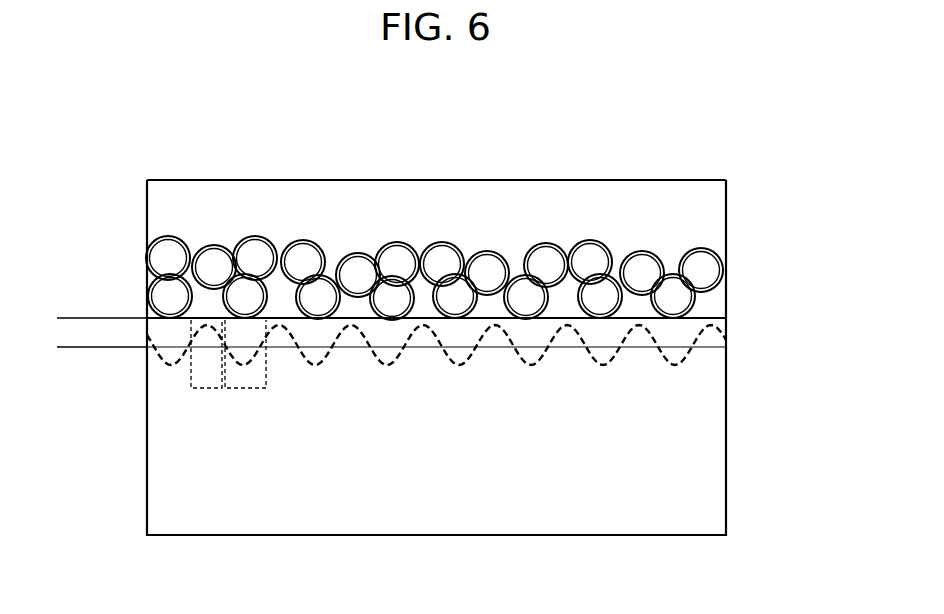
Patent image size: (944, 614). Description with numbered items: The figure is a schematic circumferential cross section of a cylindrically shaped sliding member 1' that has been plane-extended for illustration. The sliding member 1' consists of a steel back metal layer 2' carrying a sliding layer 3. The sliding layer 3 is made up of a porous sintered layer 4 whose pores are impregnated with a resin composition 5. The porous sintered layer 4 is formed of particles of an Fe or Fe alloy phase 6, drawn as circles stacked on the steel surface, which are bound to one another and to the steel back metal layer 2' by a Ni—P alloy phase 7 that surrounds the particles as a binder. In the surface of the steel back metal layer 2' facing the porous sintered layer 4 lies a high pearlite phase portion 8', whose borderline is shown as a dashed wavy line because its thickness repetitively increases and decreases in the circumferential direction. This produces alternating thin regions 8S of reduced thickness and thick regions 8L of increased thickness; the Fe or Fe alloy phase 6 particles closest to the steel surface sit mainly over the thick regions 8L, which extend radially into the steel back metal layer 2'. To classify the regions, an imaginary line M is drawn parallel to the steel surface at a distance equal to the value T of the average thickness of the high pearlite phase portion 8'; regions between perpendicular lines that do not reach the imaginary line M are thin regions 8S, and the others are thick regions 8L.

The sliding member 1' is at (455, 192).
The steel back metal layer 2' is at (486, 426).
The sliding layer 3 is at (728, 260).
The porous sintered layer 4 is at (700, 246).
The resin composition 5 is at (543, 208).
The Fe or Fe alloy phase 6 is at (398, 263).
The Ni-P alloy phase 7 is at (405, 243).
The high pearlite phase portion 8' is at (486, 345).
The thin regions 8S is at (208, 388).
The thick regions 8L is at (243, 388).
The value of the average thickness T is at (82, 262).
The imaginary line M is at (172, 346).